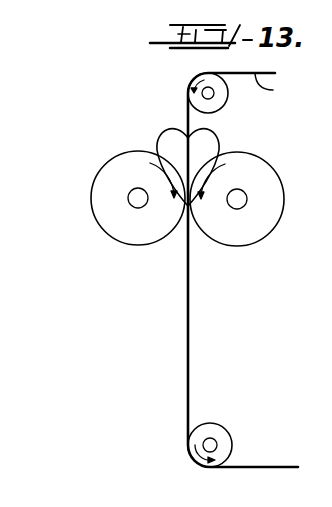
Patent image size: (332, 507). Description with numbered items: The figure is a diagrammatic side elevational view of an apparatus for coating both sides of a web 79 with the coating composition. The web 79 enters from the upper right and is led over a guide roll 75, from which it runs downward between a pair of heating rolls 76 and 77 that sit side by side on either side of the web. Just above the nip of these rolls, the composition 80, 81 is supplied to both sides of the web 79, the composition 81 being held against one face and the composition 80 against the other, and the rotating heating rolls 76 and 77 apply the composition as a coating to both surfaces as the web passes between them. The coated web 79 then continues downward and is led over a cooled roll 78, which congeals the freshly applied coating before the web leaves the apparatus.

The guide roll 75 is at (226, 103).
The heating roll 76 is at (262, 187).
The heating roll 77 is at (112, 178).
The cooled roll 78 is at (210, 430).
The web 79 is at (277, 88).
The composition 80 is at (212, 141).
The composition 81 is at (176, 131).